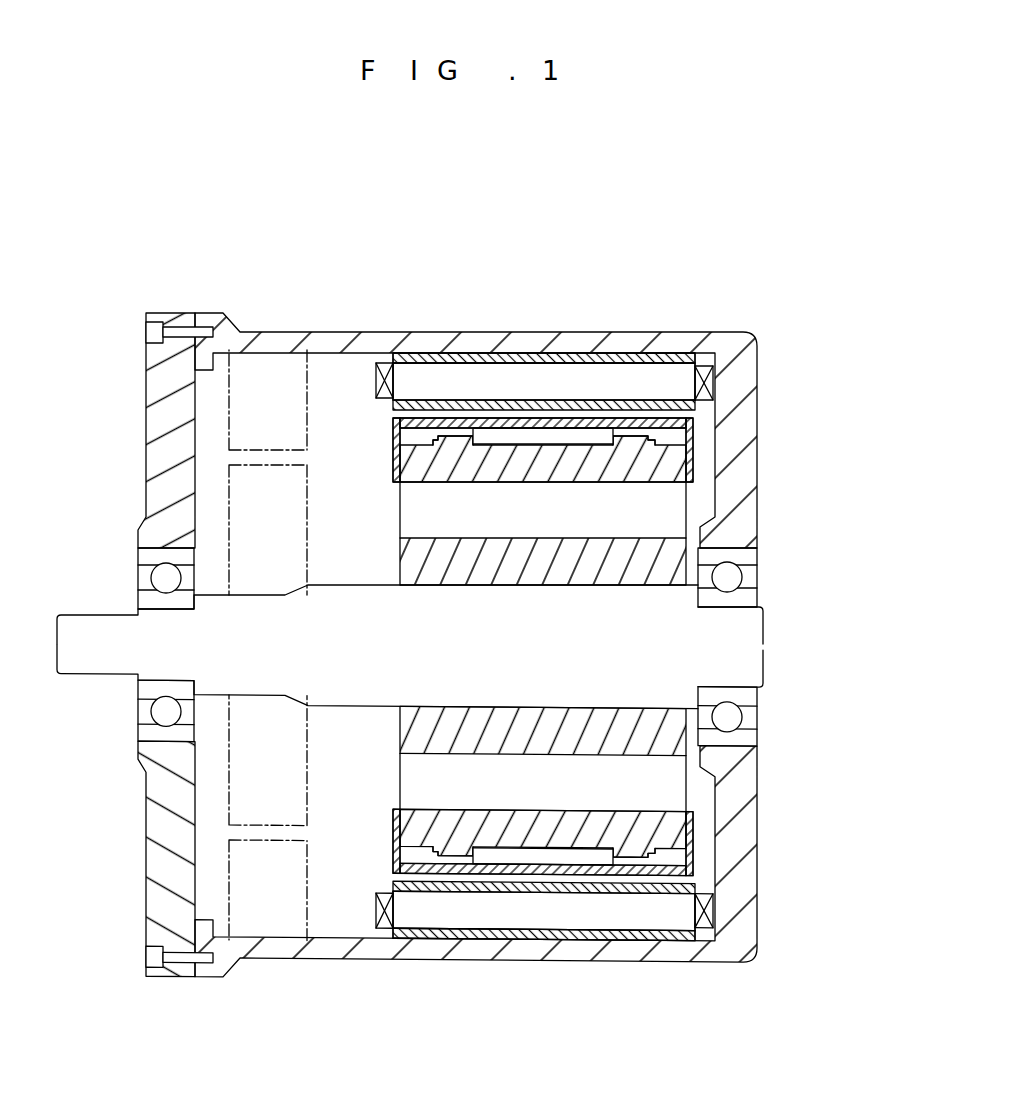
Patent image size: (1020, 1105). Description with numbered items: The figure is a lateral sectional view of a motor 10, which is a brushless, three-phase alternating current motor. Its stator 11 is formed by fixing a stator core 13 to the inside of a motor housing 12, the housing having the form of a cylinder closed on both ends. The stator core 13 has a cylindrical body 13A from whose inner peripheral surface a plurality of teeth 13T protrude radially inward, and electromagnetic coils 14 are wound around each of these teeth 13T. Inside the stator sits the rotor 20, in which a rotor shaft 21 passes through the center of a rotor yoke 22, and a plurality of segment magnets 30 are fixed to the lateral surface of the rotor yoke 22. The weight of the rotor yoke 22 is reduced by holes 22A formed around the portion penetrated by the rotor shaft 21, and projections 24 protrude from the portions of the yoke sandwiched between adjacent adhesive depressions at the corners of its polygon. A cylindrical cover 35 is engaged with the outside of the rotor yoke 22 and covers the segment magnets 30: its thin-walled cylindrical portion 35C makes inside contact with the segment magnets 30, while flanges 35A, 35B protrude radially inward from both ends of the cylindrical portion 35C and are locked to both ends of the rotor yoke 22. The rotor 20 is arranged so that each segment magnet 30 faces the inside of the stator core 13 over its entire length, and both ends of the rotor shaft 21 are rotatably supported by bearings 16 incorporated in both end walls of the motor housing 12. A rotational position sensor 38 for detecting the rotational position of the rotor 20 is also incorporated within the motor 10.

The motor 10 is at (775, 291).
The stator 11 is at (759, 378).
The motor housing 12 is at (657, 341).
The stator core 13 is at (590, 353).
The cylindrical body 13A is at (455, 355).
The teeth 13T is at (502, 378).
The electromagnetic coils 14 is at (385, 363).
The bearings 16 is at (148, 558).
The rotor 20 is at (689, 496).
The rotor shaft 21 is at (747, 627).
The rotor yoke 22 is at (665, 725).
The holes 22A is at (665, 763).
The projections 24 is at (457, 436).
The segment magnets 30 is at (542, 432).
The cylindrical cover 35 is at (698, 867).
The flange 35A is at (692, 853).
The flange 35B is at (392, 843).
The cylindrical portion 35C is at (523, 872).
The rotational position sensor 38 is at (308, 400).